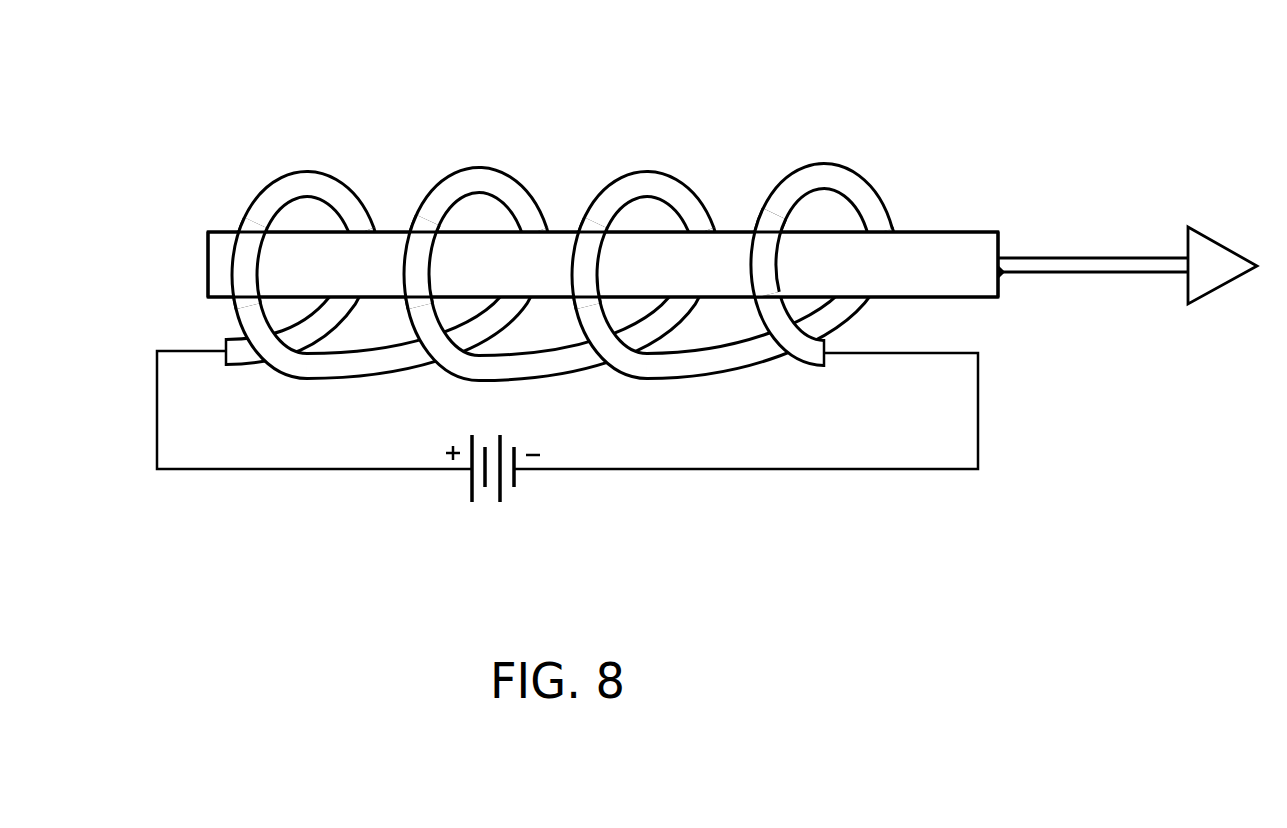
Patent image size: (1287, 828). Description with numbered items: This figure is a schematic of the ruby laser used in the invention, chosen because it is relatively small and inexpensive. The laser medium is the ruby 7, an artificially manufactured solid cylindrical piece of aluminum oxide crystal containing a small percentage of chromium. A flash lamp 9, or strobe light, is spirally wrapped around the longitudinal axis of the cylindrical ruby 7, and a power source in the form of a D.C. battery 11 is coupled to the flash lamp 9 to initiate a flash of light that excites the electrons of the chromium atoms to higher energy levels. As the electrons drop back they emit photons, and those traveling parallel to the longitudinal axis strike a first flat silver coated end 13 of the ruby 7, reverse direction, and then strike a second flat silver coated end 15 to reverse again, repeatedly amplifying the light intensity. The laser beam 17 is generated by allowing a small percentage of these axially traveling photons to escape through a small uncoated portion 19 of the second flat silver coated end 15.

The ruby 7 is at (924, 232).
The flash lamp 9 is at (305, 170).
The D.C. battery 11 is at (470, 489).
The first flat silver coated end 13 is at (207, 264).
The second flat silver coated end 15 is at (999, 238).
The laser beam 17 is at (1108, 258).
The uncoated portion 19 is at (1001, 274).